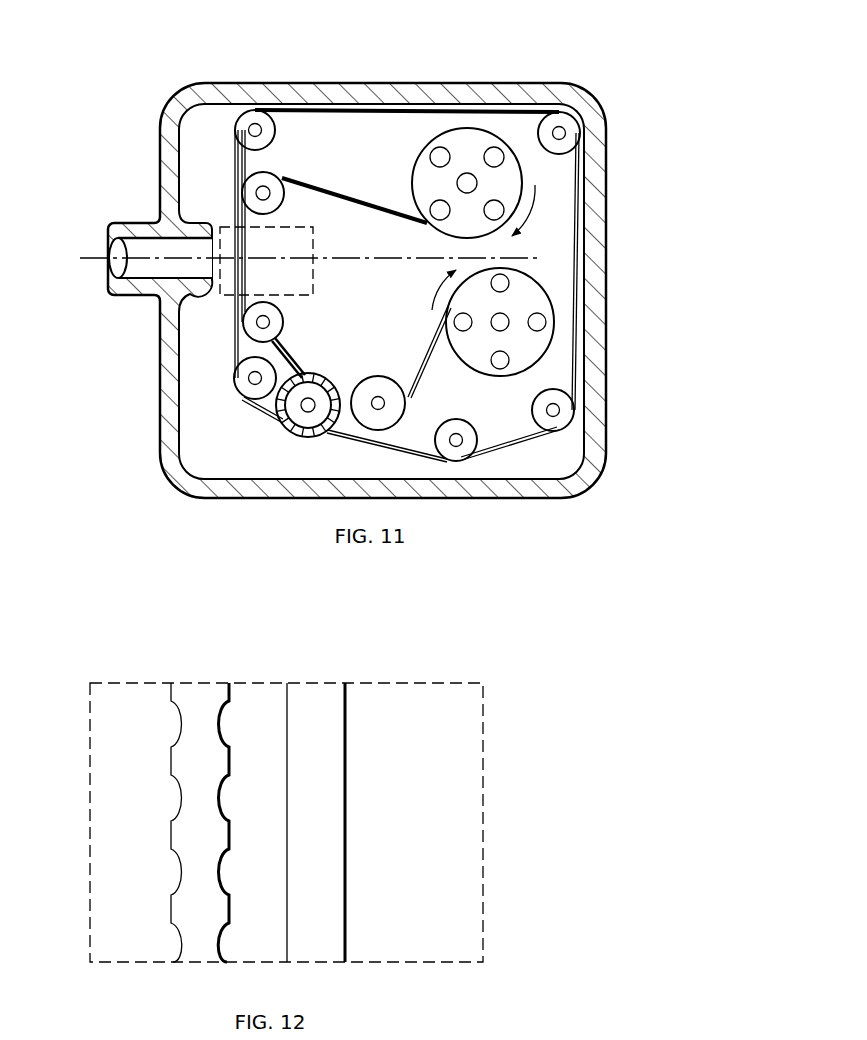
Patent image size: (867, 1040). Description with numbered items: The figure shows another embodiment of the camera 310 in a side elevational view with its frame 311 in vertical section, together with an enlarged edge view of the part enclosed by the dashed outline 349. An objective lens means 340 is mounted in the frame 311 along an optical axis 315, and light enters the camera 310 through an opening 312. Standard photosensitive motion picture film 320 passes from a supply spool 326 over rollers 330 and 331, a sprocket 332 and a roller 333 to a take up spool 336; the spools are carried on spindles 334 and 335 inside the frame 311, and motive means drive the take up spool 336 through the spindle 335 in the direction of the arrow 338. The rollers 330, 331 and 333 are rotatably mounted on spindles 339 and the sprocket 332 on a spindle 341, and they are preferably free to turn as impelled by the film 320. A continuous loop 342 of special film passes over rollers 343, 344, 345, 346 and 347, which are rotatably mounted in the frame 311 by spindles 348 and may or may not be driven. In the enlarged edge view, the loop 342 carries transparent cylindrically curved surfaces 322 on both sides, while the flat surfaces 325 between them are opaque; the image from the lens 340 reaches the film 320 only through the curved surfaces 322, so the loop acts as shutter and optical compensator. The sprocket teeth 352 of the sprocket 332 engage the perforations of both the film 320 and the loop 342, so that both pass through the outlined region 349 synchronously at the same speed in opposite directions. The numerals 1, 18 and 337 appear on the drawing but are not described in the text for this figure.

In FIG. 11, the apparatus 1 is at (158, 368).
In FIG. 11, the strands 18 is at (243, 161).
In FIG. 11, the camera 310 is at (452, 84).
In FIG. 11, the frame 311 is at (533, 93).
In FIG. 11, the opening 312 is at (185, 267).
In FIG. 11, the optical axis 315 is at (160, 258).
In FIG. 11, the film strip 320 is at (343, 193).
In FIG. 12, the film strip 320 is at (347, 764).
In FIG. 12, the transparent cylindrically curved surfaces 322 is at (179, 725).
In FIG. 12, the flat surfaces 325 is at (228, 761).
In FIG. 11, the supply spool 326 is at (447, 179).
In FIG. 11, the roller 330 is at (285, 203).
In FIG. 11, the roller 331 is at (282, 312).
In FIG. 11, the sprocket 332 is at (305, 423).
In FIG. 11, the roller 333 is at (382, 377).
In FIG. 11, the spindle 334 is at (460, 184).
In FIG. 11, the spindle 335 is at (508, 327).
In FIG. 11, the take up spool 336 is at (492, 330).
In FIG. 11, the rotation direction arrow 337 is at (533, 208).
In FIG. 11, the arrow 338 is at (437, 294).
In FIG. 11, the spindles 339 is at (270, 192).
In FIG. 11, the objective lens means 340 is at (121, 259).
In FIG. 11, the spindle 341 is at (291, 405).
In FIG. 11, the continuous loop 342 is at (372, 107).
In FIG. 12, the continuous loop 342 is at (231, 693).
In FIG. 11, the roller 343 is at (277, 130).
In FIG. 11, the roller 344 is at (238, 392).
In FIG. 11, the roller 345 is at (452, 452).
In FIG. 11, the roller 346 is at (537, 400).
In FIG. 11, the roller 347 is at (548, 152).
In FIG. 11, the spindles 348 is at (254, 124).
In FIG. 11, the dashed outline 349 is at (313, 258).
In FIG. 12, the dashed outline 349 is at (485, 848).
In FIG. 11, the sprocket teeth 352 is at (325, 378).